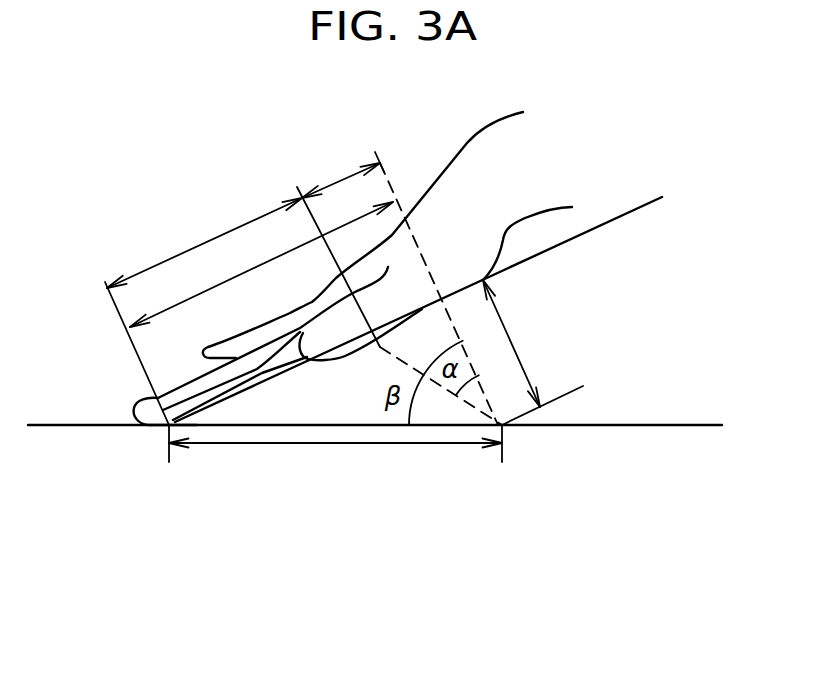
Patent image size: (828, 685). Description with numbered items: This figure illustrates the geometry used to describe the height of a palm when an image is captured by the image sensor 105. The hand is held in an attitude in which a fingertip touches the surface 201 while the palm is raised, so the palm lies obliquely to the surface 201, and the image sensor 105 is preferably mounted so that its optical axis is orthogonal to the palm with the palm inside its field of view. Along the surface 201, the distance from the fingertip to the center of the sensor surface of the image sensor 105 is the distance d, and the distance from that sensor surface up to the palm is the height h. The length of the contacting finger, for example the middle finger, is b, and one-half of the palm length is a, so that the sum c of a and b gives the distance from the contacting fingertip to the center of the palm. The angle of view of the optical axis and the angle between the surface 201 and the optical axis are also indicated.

The image sensor 105 is at (538, 457).
The surface 201 is at (682, 425).
The half palm length a is at (341, 173).
The finger length b is at (204, 243).
The fingertip-to-palm-center distance c is at (261, 264).
The distance d is at (335, 466).
The height h is at (511, 343).